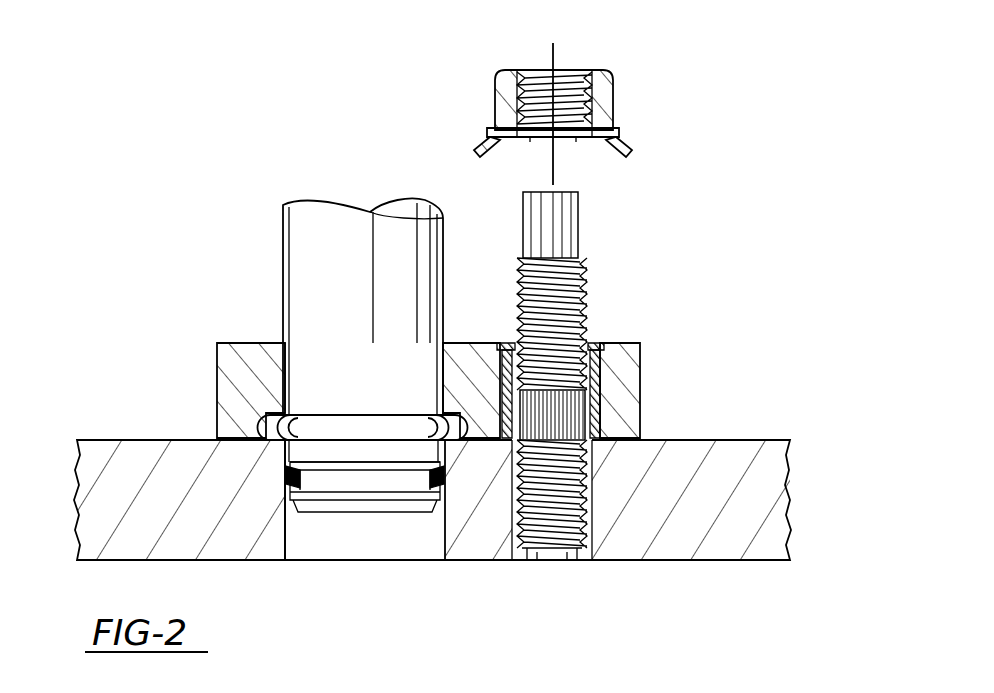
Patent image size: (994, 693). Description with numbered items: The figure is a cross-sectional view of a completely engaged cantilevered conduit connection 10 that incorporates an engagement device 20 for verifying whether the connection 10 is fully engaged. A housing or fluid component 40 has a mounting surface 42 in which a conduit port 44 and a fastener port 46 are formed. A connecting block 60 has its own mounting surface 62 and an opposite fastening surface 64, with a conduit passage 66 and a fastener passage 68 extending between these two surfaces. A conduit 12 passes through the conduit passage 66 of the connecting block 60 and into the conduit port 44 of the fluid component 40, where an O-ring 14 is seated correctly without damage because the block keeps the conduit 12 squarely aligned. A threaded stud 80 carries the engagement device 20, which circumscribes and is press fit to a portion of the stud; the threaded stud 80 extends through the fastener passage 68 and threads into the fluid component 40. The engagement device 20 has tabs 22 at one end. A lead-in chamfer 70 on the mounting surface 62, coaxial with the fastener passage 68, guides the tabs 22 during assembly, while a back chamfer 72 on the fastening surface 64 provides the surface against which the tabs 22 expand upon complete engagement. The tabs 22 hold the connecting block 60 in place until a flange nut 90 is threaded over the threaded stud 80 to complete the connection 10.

The cantilevered conduit connection 10 is at (169, 247).
The conduit 12 is at (311, 205).
The O-ring 14 is at (450, 480).
The engagement device 20 is at (594, 343).
The tabs 22 is at (608, 345).
The fluid component 40 is at (104, 438).
The mounting surface 42 is at (153, 440).
The conduit port 44 is at (290, 558).
The fastener port 46 is at (537, 561).
The connecting block 60 is at (207, 341).
The mounting surface 62 is at (222, 446).
The fastening surface 64 is at (257, 343).
The conduit passage 66 is at (292, 352).
The fastener passage 68 is at (596, 389).
The lead-in chamfer 70 is at (606, 443).
The back chamfer 72 is at (506, 343).
The threaded stud 80 is at (578, 561).
The flange nut 90 is at (626, 102).